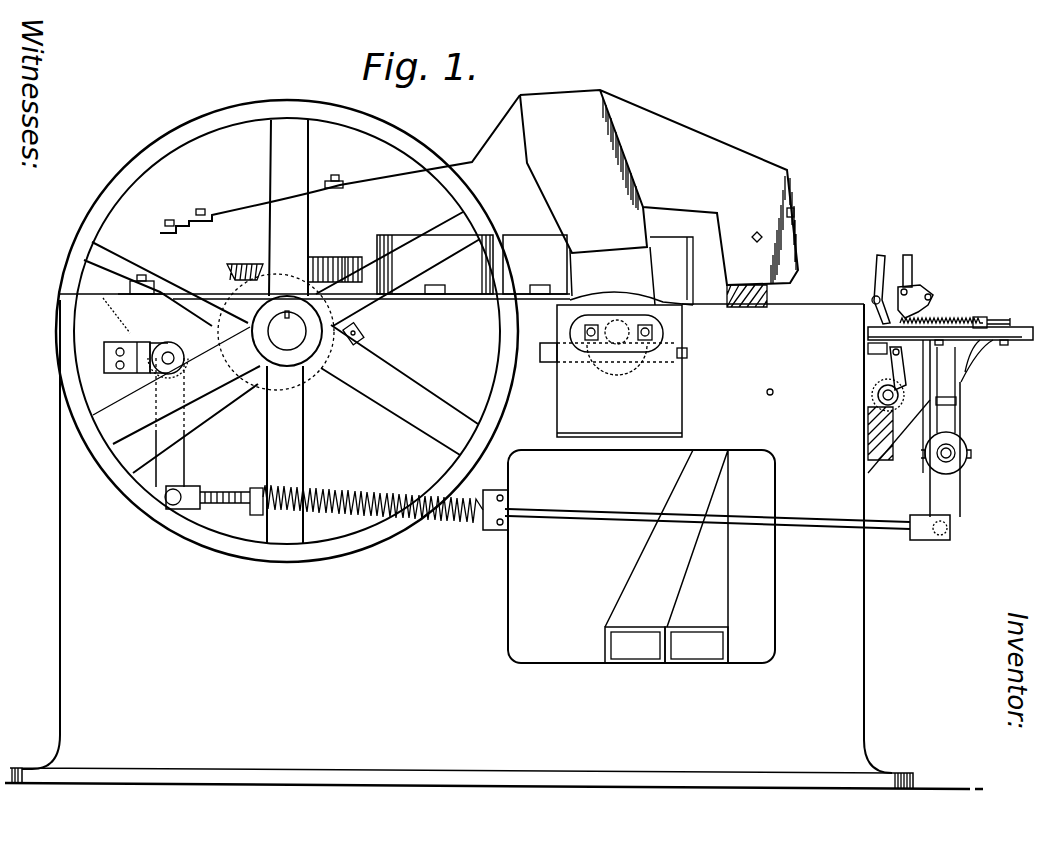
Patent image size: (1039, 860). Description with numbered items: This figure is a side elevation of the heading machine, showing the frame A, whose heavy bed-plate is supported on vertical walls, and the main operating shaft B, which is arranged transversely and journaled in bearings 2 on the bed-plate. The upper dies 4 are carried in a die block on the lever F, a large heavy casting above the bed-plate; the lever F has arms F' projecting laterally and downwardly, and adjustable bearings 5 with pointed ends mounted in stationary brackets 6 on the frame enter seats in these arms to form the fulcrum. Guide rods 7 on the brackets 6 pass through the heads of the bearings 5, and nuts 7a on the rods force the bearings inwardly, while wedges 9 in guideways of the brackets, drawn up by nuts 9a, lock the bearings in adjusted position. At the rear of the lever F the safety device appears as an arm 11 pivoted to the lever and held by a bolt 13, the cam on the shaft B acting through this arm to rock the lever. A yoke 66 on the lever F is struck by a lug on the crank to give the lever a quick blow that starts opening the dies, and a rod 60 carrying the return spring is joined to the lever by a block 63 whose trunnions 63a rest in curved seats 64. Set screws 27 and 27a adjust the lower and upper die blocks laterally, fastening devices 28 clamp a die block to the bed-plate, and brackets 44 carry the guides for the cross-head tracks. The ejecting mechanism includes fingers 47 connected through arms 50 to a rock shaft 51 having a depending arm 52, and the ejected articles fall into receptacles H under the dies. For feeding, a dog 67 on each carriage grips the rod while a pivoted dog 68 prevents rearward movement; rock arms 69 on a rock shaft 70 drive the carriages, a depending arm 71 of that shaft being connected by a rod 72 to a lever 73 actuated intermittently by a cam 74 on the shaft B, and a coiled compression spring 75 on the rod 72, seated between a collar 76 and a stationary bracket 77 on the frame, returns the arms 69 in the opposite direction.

The frame A is at (494, 544).
The main operating shaft B is at (291, 336).
The lever F is at (429, 198).
The arms F' is at (631, 271).
The receptacles H is at (687, 588).
The bearings 2 is at (364, 332).
The upper dies 4 is at (752, 305).
The adjustable bearings 5 is at (622, 322).
The stationary brackets 6 is at (619, 371).
The guide rods 7 is at (588, 345).
The nuts 7a is at (590, 326).
The wedges 9 is at (603, 367).
The nuts 9a is at (688, 355).
The arm 11 is at (243, 264).
The bolt 13 is at (170, 222).
The set screws 27 is at (773, 394).
The set screws 27a is at (762, 237).
The fastening devices 28 is at (796, 212).
The brackets 44 is at (548, 268).
The fingers 47 is at (870, 348).
The arms 50 is at (895, 365).
The rock shaft 51 is at (880, 400).
The depending arm 52 is at (868, 438).
The rod 60 is at (139, 279).
The block 63 is at (130, 291).
The trunnions 63a is at (106, 315).
The curved seats 64 is at (160, 345).
The yoke 66 is at (343, 262).
The dog 67 is at (912, 272).
The dog 68 is at (877, 270).
The rock arms 69 is at (930, 318).
The rock shaft 70 is at (943, 457).
The depending arm 71 is at (950, 495).
The rod 72 is at (818, 528).
The lever 73 is at (176, 447).
The cam 74 is at (253, 378).
The coiled compression spring 75 is at (376, 492).
The collar 76 is at (250, 508).
The stationary bracket 77 is at (488, 524).